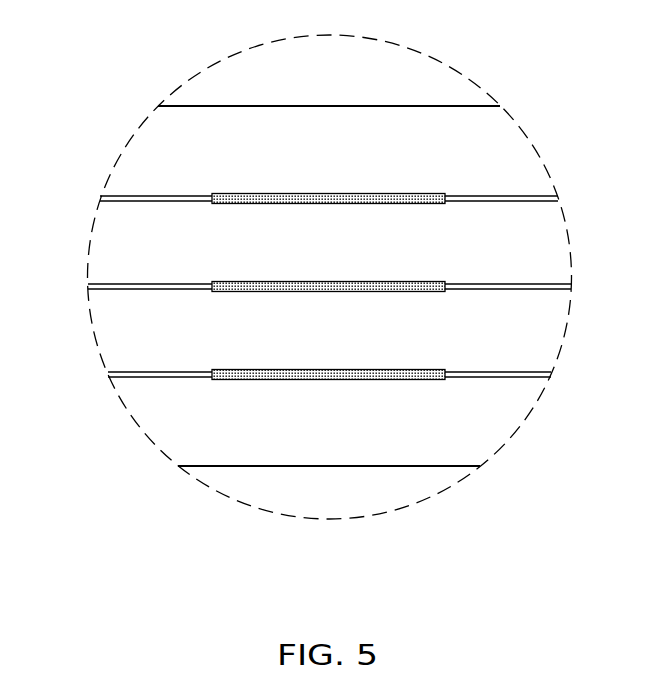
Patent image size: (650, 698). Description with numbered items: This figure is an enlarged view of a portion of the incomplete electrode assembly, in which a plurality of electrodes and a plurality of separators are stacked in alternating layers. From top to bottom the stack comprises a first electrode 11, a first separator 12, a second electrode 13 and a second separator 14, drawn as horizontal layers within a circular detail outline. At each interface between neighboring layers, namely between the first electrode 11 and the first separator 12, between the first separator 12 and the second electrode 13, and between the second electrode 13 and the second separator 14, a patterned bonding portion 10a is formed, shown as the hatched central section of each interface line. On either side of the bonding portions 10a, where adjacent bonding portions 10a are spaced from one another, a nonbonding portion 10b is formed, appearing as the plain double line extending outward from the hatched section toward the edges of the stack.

The patterned bonding portion 10a is at (438, 193).
The nonbonding portion 10b is at (528, 197).
The first electrode 11 is at (153, 152).
The first separator 12 is at (103, 243).
The second electrode 13 is at (103, 332).
The second separator 14 is at (142, 418).